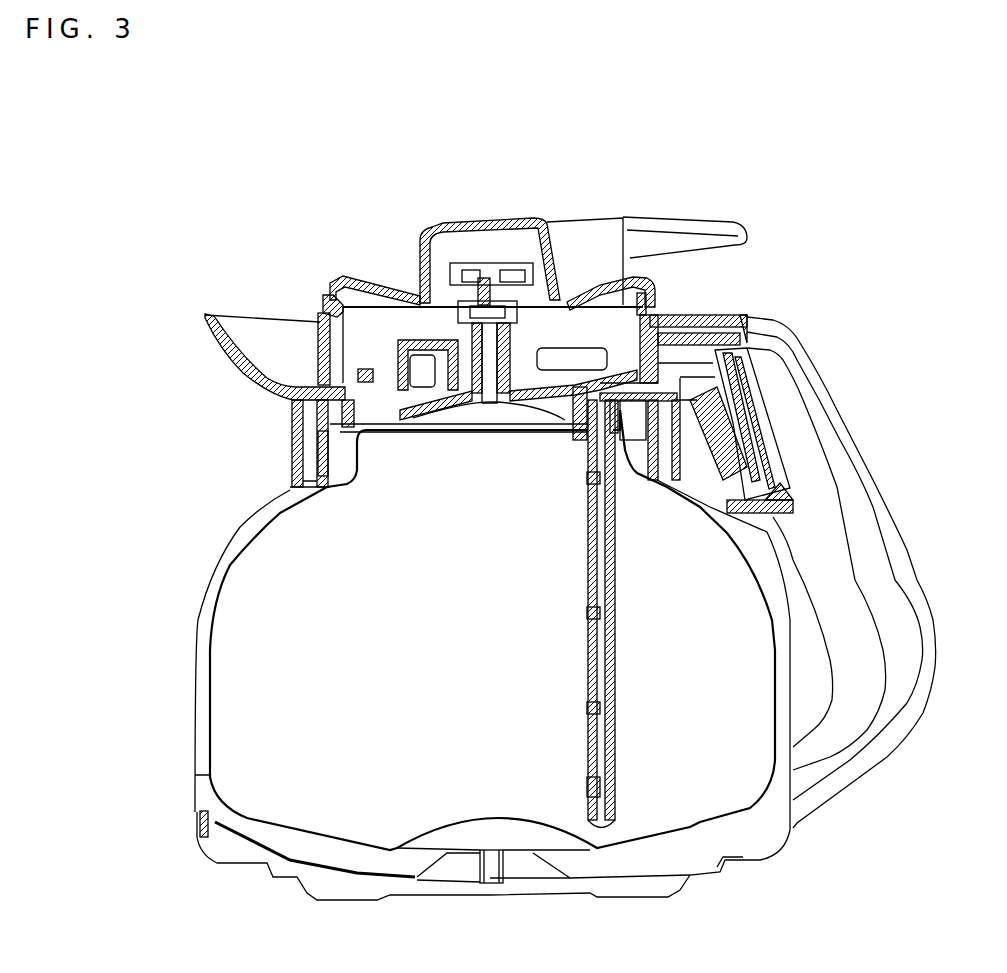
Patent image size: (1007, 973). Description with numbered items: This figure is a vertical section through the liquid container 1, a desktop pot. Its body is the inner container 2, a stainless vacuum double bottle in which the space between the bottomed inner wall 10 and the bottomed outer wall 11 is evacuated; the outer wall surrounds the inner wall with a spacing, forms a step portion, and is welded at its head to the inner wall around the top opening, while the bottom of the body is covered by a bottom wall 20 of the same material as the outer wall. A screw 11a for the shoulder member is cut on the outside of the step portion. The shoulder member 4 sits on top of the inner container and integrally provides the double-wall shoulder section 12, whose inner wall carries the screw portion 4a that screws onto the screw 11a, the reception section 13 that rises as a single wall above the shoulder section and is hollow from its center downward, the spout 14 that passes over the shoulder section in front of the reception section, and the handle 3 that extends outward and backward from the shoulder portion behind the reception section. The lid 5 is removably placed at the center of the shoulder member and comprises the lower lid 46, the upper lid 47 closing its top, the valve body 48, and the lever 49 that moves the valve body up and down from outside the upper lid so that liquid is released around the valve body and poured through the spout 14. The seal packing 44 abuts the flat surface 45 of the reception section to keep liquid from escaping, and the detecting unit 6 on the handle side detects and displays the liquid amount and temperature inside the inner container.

The liquid container 1 is at (222, 232).
The inner container 2 is at (207, 568).
The handle 3 is at (872, 493).
The shoulder member 4 is at (272, 429).
The screw portion 4a is at (317, 494).
The lid 5 is at (514, 201).
The detecting unit 6 is at (777, 372).
The inner wall 10 is at (208, 683).
The outer wall 11 is at (195, 738).
The screw for the shoulder member 11a is at (333, 457).
The shoulder section 12 is at (290, 459).
The reception section 13 is at (296, 393).
The spout 14 is at (207, 323).
The bottom wall 20 is at (205, 853).
The seal packing 44 is at (370, 378).
The flat surface 45 is at (358, 394).
The lower lid 46 is at (338, 318).
The upper lid 47 is at (343, 281).
The valve body 48 is at (520, 402).
The lever 49 is at (668, 219).